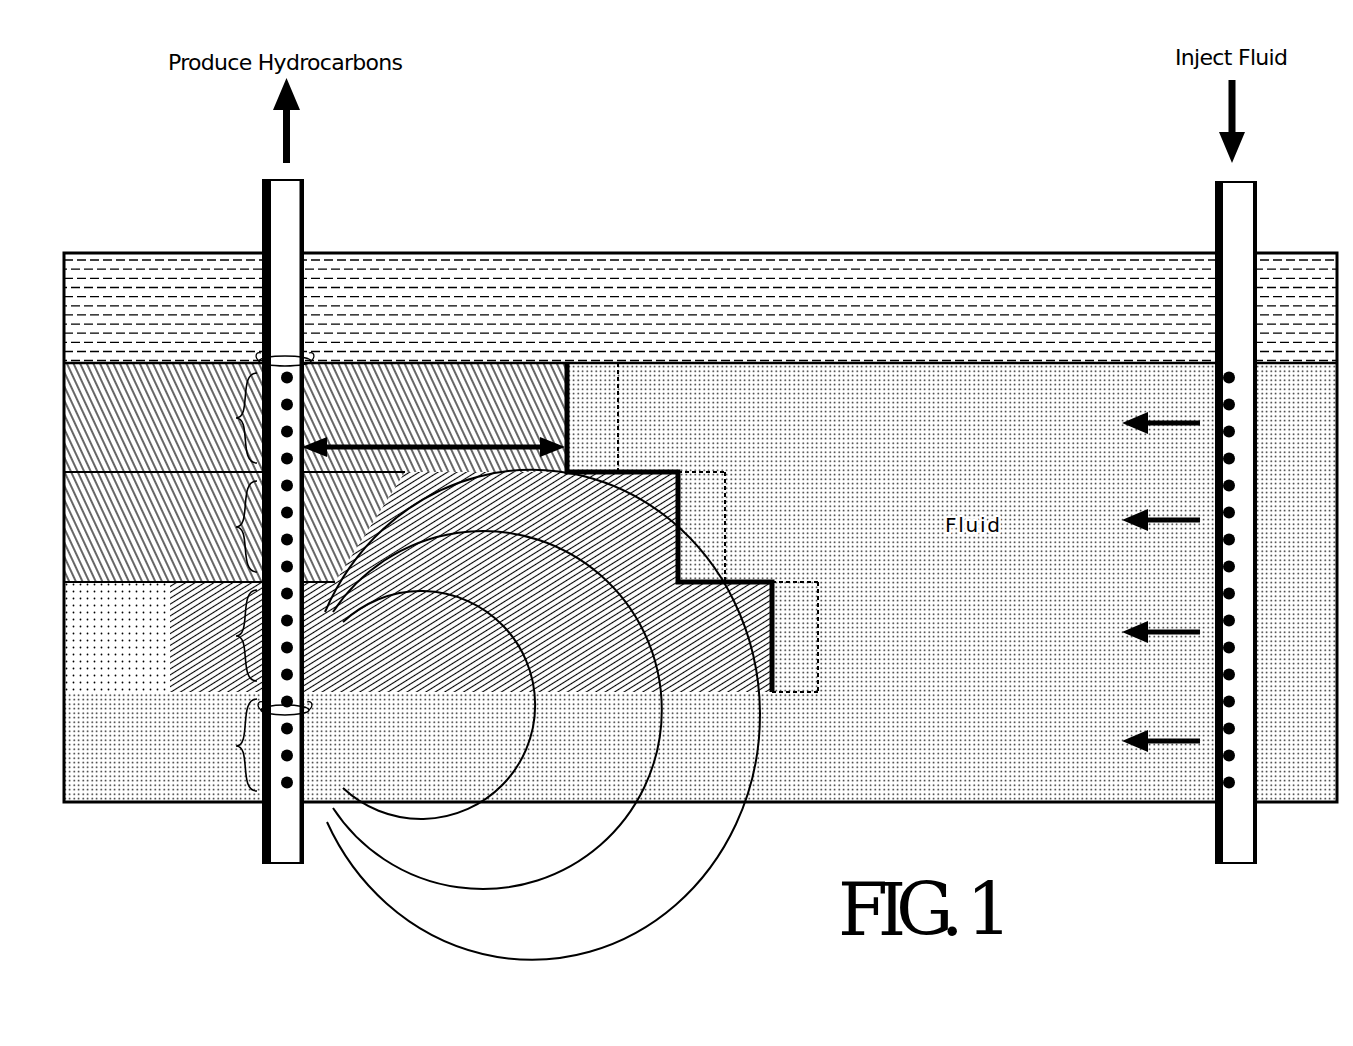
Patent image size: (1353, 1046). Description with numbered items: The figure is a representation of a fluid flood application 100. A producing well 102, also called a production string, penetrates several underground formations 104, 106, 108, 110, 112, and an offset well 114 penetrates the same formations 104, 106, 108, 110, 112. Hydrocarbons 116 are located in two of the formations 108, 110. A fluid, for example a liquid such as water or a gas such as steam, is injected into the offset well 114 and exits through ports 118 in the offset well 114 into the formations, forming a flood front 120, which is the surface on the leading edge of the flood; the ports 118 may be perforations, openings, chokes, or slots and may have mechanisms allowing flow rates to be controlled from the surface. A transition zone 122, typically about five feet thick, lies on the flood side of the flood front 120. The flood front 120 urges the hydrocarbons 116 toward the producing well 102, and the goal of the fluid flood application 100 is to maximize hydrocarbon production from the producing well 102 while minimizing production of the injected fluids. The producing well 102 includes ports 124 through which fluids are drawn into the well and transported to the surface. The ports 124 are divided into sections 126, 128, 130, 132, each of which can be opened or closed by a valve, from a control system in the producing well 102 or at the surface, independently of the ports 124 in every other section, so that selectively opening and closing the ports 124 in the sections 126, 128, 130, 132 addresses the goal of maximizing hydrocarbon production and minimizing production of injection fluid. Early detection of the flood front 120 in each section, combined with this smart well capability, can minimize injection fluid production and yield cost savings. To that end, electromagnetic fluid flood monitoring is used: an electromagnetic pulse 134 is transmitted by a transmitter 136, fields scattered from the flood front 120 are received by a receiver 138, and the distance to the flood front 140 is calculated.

The fluid flood application 100 is at (158, 88).
The producing well 102 is at (304, 236).
The underground formation 104 is at (120, 291).
The underground formation 106 is at (120, 392).
The underground formation 108 is at (120, 501).
The underground formation 110 is at (120, 607).
The underground formation 112 is at (120, 712).
The offset well 114 is at (1256, 226).
The hydrocarbons 116 is at (537, 607).
The port 118 is at (1236, 378).
The flood front 120 is at (567, 368).
The transition zone 122 is at (612, 429).
The port 124 is at (300, 375).
The section 126 is at (229, 418).
The section 128 is at (229, 526).
The section 130 is at (229, 635).
The section 132 is at (225, 745).
The electromagnetic pulse 134 is at (717, 865).
The transmitter 136 is at (308, 712).
The receiver 138 is at (258, 362).
The distance to the flood front 140 is at (433, 424).